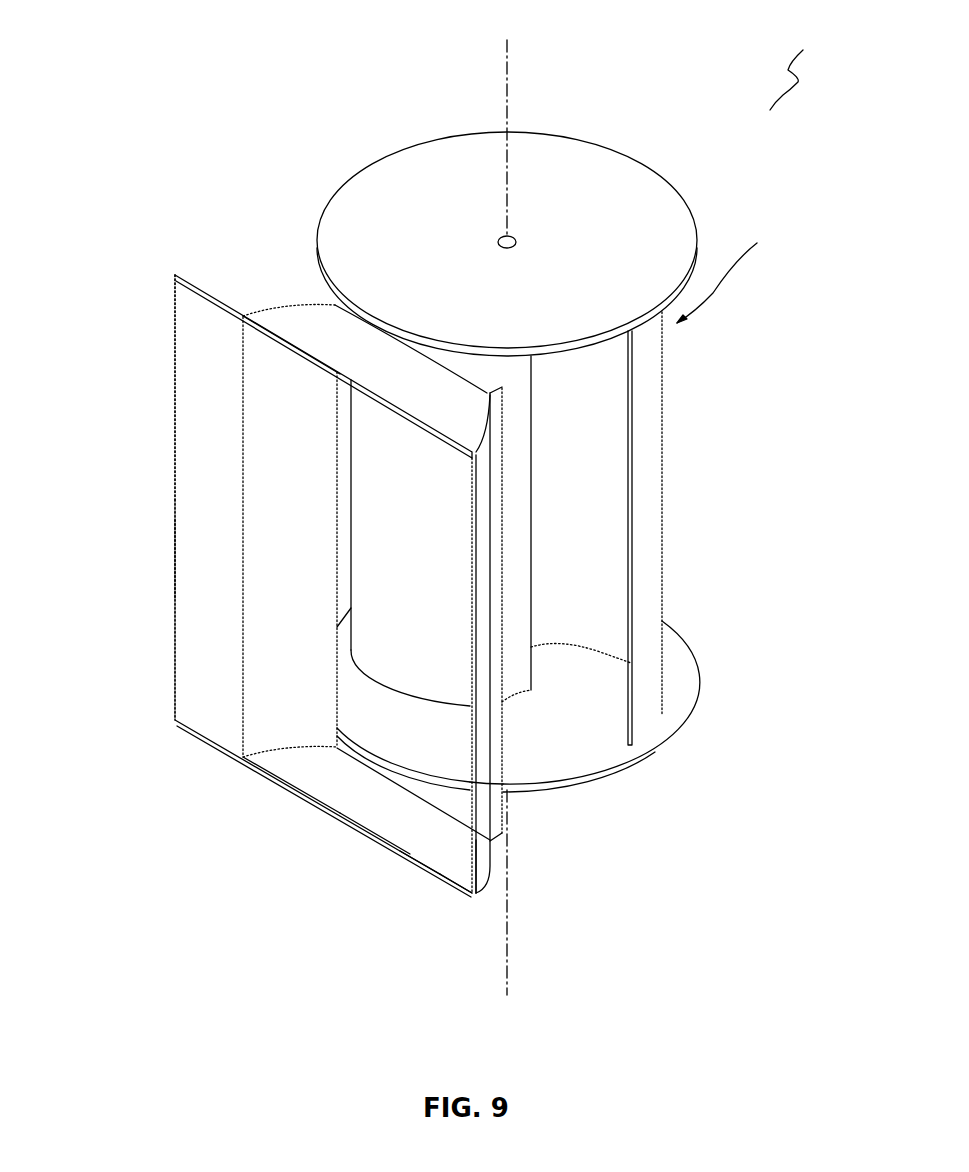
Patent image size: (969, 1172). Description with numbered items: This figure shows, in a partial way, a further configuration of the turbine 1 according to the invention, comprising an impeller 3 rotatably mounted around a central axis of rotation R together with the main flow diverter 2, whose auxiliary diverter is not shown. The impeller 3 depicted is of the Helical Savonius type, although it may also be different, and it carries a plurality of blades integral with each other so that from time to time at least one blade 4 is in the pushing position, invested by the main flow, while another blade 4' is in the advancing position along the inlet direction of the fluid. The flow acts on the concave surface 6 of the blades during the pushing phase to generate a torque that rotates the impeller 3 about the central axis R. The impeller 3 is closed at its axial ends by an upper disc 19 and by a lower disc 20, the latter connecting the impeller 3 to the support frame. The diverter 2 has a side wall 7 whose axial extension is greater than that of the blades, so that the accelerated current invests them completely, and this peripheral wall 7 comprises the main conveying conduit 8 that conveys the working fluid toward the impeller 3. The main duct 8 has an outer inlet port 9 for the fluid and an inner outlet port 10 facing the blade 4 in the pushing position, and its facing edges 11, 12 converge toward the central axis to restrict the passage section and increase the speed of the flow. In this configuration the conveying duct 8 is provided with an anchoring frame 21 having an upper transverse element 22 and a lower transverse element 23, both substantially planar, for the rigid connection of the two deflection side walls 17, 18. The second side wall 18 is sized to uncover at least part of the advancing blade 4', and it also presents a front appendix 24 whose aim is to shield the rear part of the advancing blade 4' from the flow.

The turbine 1 is at (446, 506).
The main flow diverter 2 is at (173, 258).
The impeller 3 is at (727, 271).
The blade 4 is at (638, 513).
The blade 4' is at (387, 572).
The concave surface 6 is at (590, 518).
The side wall 7 is at (174, 516).
The main conveying conduit 8 is at (365, 790).
The outer inlet port 9 is at (403, 858).
The inner outlet port 10 is at (355, 760).
The edge 11 is at (503, 785).
The edge 12 is at (243, 647).
The deflection side wall 17 is at (492, 852).
The second side wall 18 is at (307, 518).
The upper disc 19 is at (507, 214).
The lower disc 20 is at (676, 715).
The anchoring frame 21 is at (170, 366).
The upper transverse element 22 is at (297, 315).
The lower transverse element 23 is at (462, 892).
The front appendix 24 is at (194, 548).
The central axis of rotation R is at (512, 66).